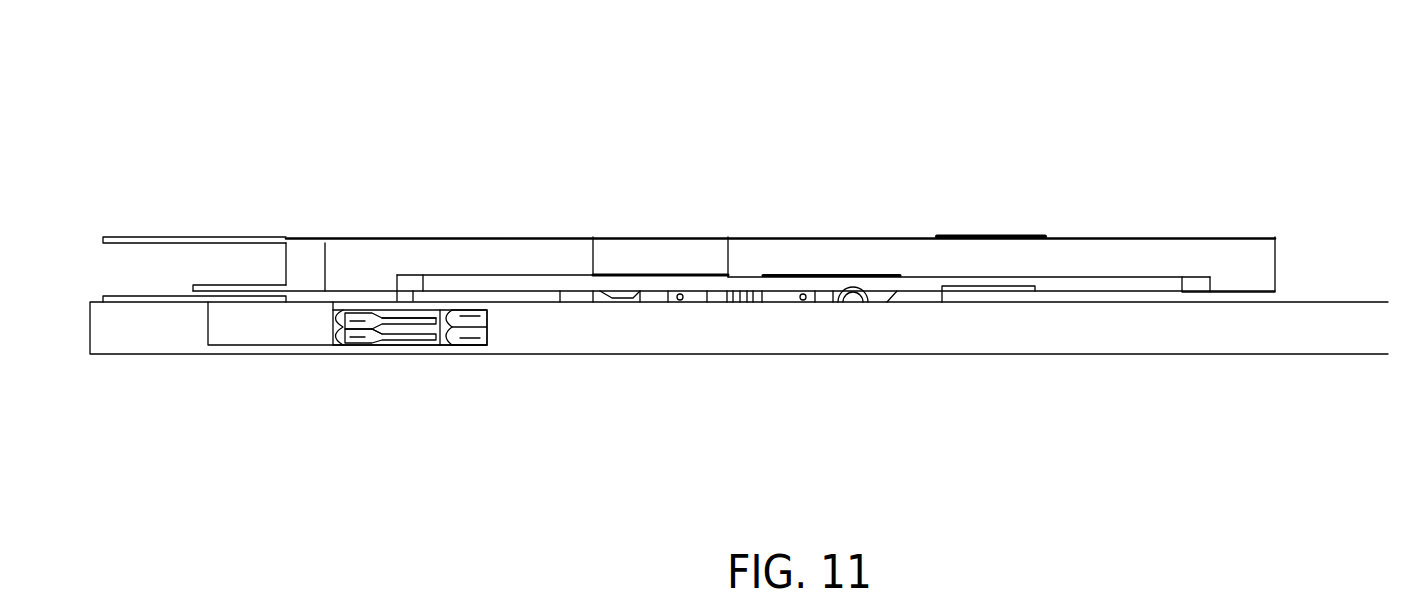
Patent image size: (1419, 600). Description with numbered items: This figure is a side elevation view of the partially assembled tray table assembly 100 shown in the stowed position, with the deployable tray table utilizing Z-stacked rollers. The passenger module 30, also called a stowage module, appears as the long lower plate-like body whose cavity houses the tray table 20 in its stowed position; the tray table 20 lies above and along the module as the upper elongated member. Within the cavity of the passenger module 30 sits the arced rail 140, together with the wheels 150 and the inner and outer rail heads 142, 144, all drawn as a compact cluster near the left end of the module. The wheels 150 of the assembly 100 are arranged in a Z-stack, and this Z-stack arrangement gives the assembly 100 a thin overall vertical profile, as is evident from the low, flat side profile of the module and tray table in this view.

The tray table assembly 100 is at (447, 137).
The tray table 20 is at (1110, 253).
The passenger module 30 is at (933, 337).
The arced rail 140 is at (490, 337).
The inner rail head 142 is at (478, 317).
The outer rail head 144 is at (355, 332).
The wheels 150 is at (407, 325).